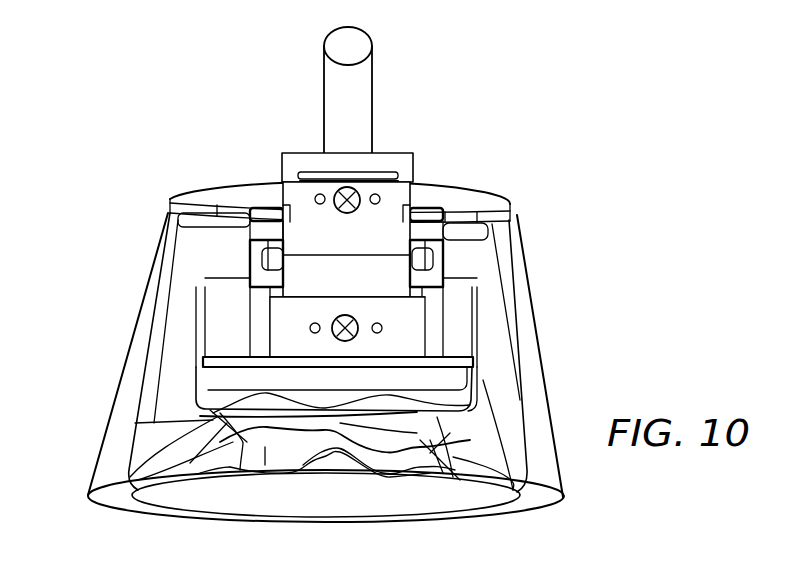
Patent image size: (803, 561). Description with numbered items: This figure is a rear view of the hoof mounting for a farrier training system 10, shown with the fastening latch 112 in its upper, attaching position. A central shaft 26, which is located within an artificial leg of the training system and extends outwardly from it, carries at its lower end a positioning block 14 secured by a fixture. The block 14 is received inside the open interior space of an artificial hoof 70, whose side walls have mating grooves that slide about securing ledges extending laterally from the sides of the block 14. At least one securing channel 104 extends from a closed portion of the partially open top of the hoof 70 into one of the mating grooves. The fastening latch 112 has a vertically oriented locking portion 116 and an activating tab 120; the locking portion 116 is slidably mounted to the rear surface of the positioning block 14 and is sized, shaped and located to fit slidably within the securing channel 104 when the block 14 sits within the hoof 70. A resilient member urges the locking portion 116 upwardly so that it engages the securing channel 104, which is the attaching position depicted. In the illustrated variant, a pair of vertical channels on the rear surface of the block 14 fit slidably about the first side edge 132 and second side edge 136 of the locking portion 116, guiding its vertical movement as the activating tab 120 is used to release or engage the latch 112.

The farrier training system 10 is at (390, 274).
The positioning block 14 is at (307, 215).
The central shaft 26 is at (352, 105).
The artificial hoof 70 is at (553, 410).
The securing channel 104 is at (255, 181).
The fastening latch 112 is at (408, 330).
The locking portion 116 is at (375, 267).
The activating tab 120 is at (462, 361).
The first side edge 132 is at (285, 256).
The second side edge 136 is at (432, 253).